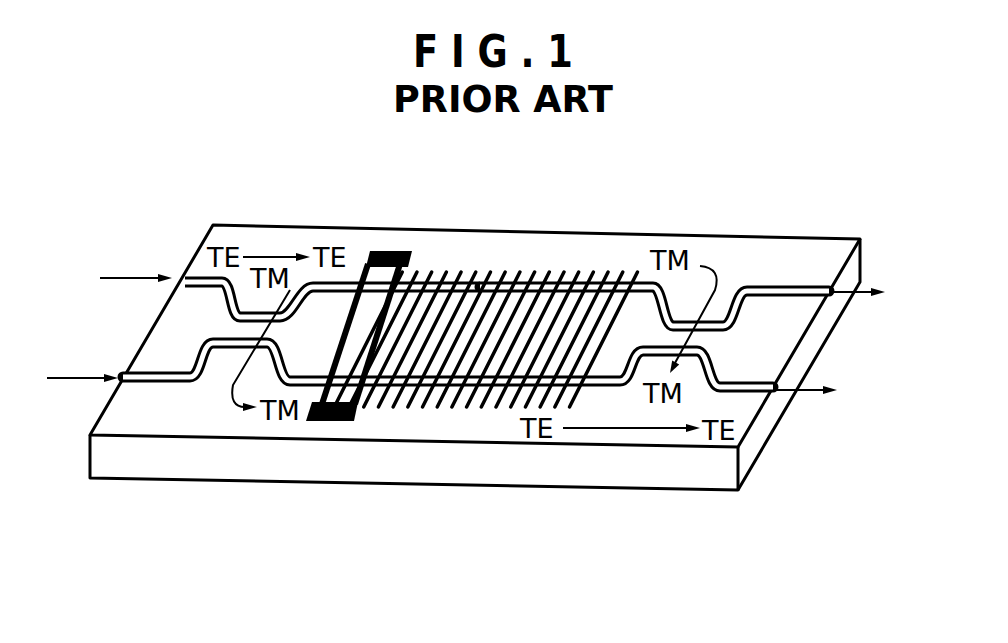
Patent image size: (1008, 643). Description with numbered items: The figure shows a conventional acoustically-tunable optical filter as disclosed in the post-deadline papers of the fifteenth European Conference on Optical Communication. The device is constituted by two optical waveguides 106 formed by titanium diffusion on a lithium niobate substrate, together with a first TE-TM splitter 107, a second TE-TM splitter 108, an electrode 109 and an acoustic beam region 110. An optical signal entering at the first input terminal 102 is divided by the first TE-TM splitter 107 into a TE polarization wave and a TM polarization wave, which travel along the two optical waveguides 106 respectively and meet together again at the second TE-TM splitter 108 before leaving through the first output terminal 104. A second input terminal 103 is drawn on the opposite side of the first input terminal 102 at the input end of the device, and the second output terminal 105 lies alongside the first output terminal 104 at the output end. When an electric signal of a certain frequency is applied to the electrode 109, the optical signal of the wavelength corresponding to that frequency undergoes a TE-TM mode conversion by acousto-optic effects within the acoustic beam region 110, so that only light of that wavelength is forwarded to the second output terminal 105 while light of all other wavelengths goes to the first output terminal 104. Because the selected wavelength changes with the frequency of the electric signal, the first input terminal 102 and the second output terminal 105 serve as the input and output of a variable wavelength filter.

The first input terminal 102 is at (180, 277).
The second input port 103 is at (117, 383).
The first output terminal 104 is at (838, 300).
The second output terminal 105 is at (777, 395).
The optical waveguides 106 is at (800, 288).
The first TE-TM splitter 107 is at (278, 256).
The second TE-TM splitter 108 is at (732, 273).
The electrode 109 is at (400, 252).
The acoustic beam region 110 is at (548, 255).